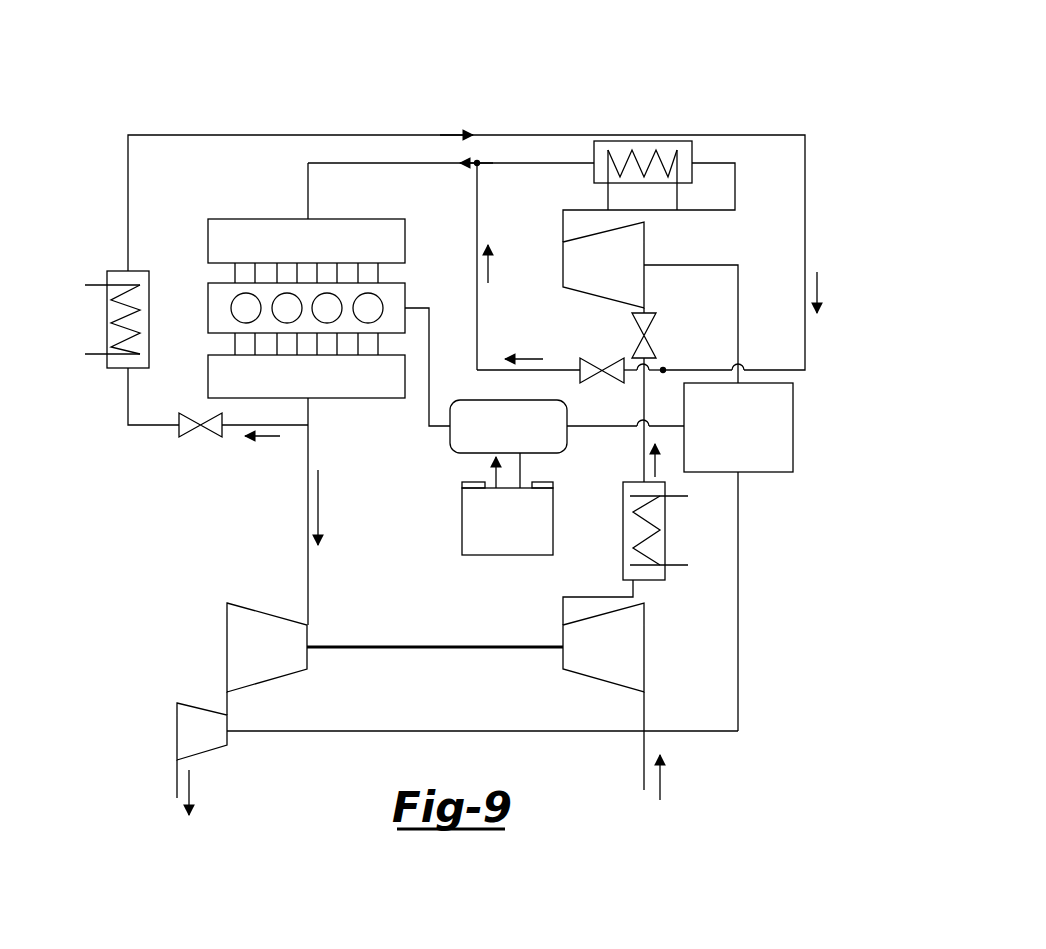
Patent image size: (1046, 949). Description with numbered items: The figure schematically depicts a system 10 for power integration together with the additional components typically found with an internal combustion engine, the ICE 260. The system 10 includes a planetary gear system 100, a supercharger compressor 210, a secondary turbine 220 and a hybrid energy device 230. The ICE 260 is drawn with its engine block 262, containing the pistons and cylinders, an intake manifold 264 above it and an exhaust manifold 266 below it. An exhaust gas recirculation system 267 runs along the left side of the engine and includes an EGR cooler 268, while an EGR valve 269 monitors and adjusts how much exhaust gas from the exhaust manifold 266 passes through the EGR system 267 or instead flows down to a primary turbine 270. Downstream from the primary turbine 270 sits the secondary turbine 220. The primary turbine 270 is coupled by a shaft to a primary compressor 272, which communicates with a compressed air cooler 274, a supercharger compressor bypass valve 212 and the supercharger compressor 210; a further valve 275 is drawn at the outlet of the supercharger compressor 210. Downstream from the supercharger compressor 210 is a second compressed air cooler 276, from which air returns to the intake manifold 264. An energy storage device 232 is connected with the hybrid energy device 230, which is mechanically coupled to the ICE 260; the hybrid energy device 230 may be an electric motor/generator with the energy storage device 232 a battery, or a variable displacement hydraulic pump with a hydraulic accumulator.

The system for power integration 10 is at (830, 127).
The planetary gear system 100 is at (797, 418).
The supercharger compressor 210 is at (645, 247).
The supercharger compressor bypass valve 212 is at (600, 360).
The secondary turbine 220 is at (175, 720).
The hybrid energy device 230 is at (494, 440).
The energy storage device 232 is at (494, 535).
The ICE 260 is at (303, 389).
The engine block 262 is at (405, 292).
The intake manifold 264 is at (358, 219).
The exhaust manifold 266 is at (358, 398).
The exhaust gas recirculation system 267 is at (114, 433).
The EGR cooler 268 is at (118, 270).
The EGR valve 269 is at (197, 438).
The primary turbine 270 is at (248, 603).
The primary compressor 272 is at (648, 647).
The compressed air cooler 274 is at (623, 558).
The valve 275 is at (656, 338).
The second compressed air cooler 276 is at (644, 141).